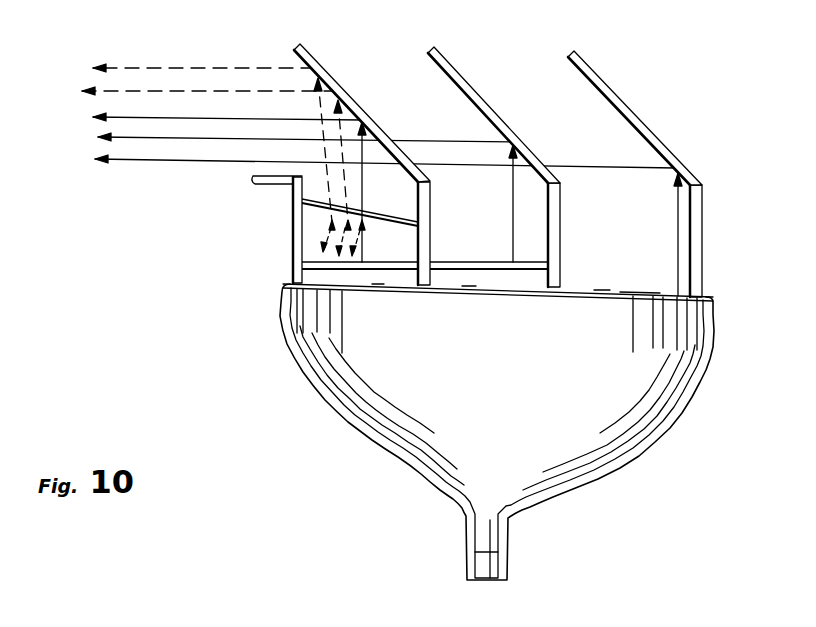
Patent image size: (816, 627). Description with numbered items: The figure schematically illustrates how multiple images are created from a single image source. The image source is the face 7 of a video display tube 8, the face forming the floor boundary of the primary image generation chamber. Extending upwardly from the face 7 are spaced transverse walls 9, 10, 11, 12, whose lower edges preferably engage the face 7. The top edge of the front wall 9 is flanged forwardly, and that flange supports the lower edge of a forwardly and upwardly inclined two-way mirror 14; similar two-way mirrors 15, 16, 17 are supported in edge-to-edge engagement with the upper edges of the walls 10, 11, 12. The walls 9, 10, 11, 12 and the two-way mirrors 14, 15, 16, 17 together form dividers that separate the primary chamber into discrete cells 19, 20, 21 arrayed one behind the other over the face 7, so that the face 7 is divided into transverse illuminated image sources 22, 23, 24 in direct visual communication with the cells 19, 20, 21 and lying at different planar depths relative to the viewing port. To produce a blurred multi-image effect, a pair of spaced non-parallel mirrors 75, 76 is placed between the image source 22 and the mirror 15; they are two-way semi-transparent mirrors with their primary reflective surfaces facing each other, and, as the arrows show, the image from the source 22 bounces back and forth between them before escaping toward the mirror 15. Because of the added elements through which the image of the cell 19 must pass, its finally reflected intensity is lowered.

The face 7 is at (638, 288).
The video display tube 8 is at (623, 457).
The front wall 9 is at (293, 243).
The transverse wall 10 is at (430, 204).
The transverse wall 11 is at (560, 215).
The transverse wall 12 is at (702, 228).
The two-way mirror 14 is at (253, 181).
The two-way mirror 15 is at (317, 56).
The two-way mirror 16 is at (450, 62).
The two-way mirror 17 is at (594, 63).
The cell 19 is at (301, 115).
The cell 20 is at (422, 112).
The cell 21 is at (564, 116).
The illuminated image source 22 is at (382, 283).
The illuminated image source 23 is at (466, 288).
The illuminated image source 24 is at (598, 288).
The non-parallel mirror 75 is at (402, 215).
The non-parallel mirror 76 is at (378, 262).